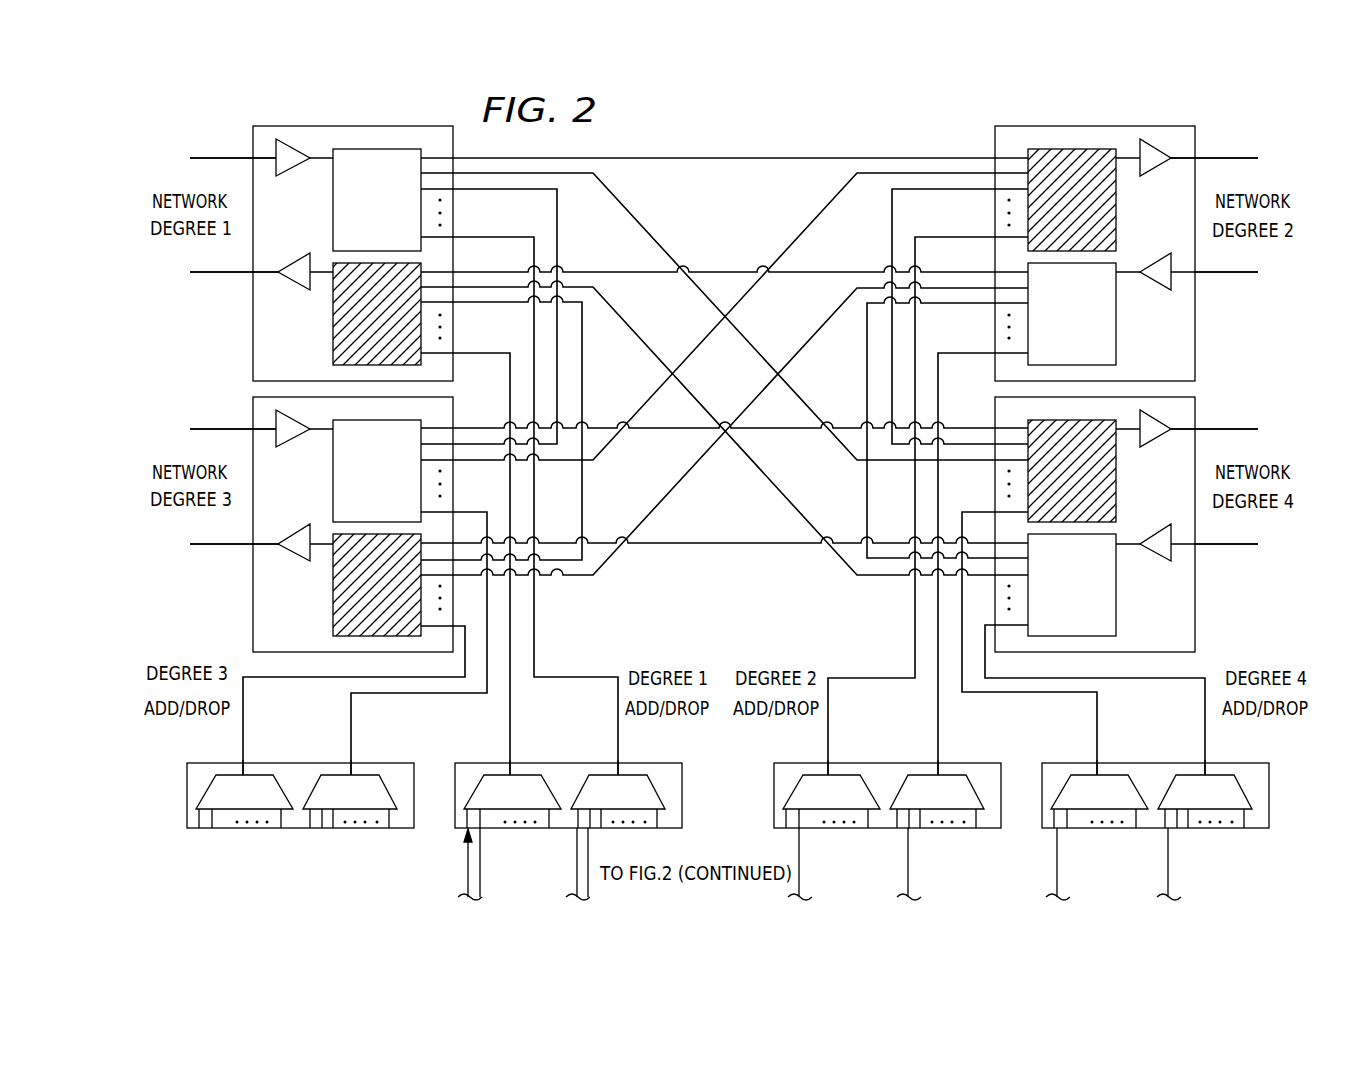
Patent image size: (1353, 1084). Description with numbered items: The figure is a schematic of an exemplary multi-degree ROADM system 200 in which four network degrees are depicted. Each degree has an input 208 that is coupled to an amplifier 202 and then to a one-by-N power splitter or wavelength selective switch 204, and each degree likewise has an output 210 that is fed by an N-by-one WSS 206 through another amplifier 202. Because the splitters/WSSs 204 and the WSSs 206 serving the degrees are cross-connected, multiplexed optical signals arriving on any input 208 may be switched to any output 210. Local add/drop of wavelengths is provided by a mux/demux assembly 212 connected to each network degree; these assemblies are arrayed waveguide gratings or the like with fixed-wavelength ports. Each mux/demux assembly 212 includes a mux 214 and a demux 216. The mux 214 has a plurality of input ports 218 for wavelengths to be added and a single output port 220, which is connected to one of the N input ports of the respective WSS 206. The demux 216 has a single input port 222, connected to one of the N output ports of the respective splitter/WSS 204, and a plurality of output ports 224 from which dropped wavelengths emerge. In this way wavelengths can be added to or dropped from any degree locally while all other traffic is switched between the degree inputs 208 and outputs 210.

The multi-degree ROADM system 200 is at (755, 144).
The amplifier 202 is at (277, 177).
The 1×N PS or WSS 204 is at (333, 197).
The N×1 WSS 206 is at (333, 334).
The input 208 is at (1239, 566).
The output 210 is at (1241, 140).
The mux/demux assembly 212 is at (1293, 785).
The mux 214 is at (260, 775).
The demux 216 is at (365, 775).
The input ports 218 is at (1087, 852).
The output port 220 is at (239, 775).
The input port 222 is at (348, 775).
The output ports 224 is at (322, 828).